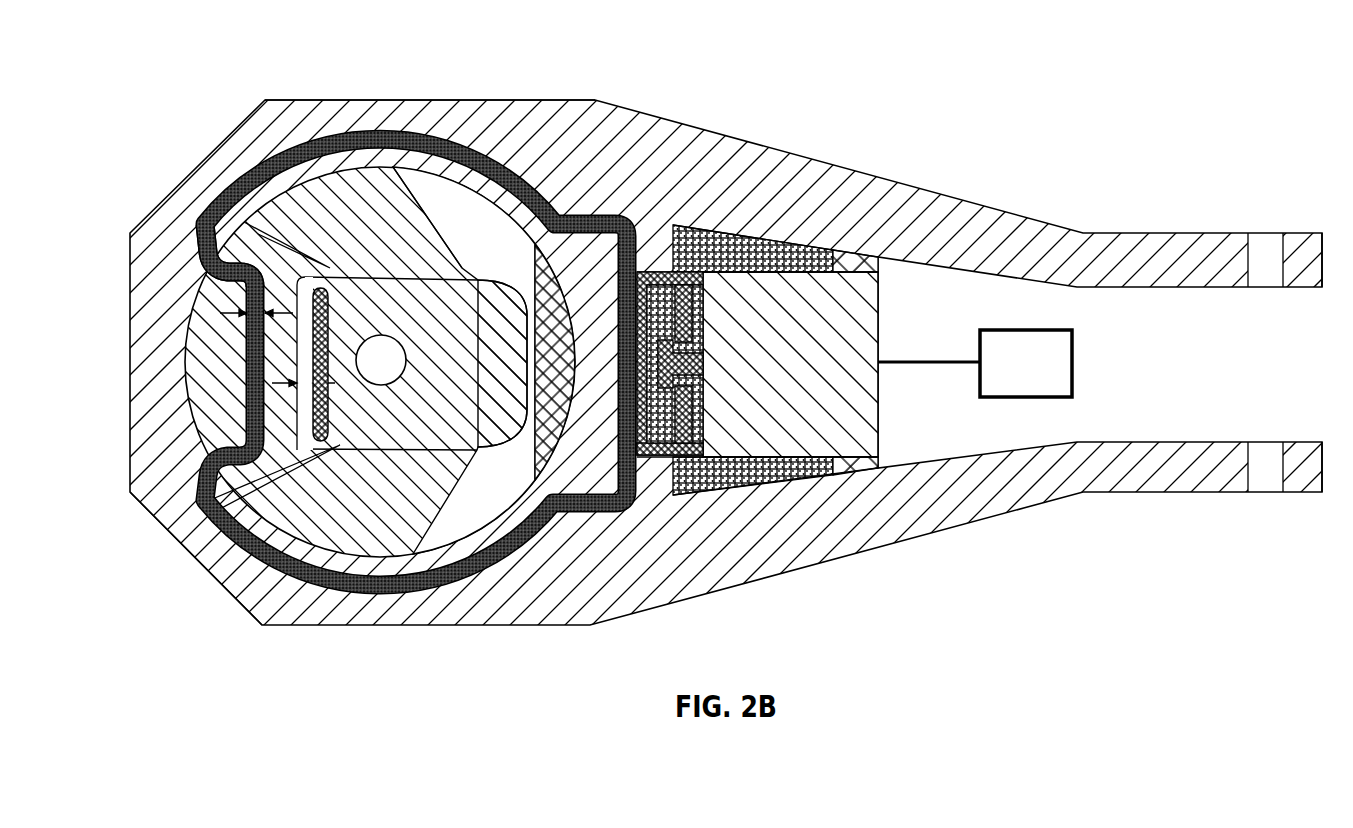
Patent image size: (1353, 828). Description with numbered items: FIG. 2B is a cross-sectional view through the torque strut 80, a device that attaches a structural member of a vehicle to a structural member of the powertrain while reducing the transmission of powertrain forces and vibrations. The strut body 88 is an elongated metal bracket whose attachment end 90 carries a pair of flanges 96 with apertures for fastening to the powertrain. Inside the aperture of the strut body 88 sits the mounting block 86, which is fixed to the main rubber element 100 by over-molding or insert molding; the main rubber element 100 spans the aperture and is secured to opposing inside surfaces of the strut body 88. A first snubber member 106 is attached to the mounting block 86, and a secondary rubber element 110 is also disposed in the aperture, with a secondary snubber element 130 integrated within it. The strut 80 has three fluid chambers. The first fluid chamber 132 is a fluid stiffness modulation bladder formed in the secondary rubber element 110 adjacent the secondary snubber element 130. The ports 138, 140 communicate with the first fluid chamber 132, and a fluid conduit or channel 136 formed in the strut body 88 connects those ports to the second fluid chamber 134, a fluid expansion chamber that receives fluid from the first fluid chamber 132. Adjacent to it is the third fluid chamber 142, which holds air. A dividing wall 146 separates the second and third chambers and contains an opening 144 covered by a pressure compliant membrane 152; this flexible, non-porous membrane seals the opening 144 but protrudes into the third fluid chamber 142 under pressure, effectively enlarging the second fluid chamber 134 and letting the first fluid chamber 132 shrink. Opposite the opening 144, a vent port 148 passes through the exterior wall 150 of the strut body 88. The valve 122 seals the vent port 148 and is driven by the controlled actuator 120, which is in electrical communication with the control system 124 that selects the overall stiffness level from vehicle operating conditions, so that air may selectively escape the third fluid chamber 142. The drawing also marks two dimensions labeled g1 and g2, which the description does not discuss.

The torque strut 80 is at (402, 94).
The fluid conduit or channel 136 is at (354, 133).
The dividing wall 146 is at (638, 268).
The strut body 88 is at (850, 192).
The flanges 96 is at (1178, 233).
The attachment end 90 is at (1268, 218).
The port 138 is at (197, 230).
The seal gap g2 is at (237, 292).
The secondary rubber element 110 is at (330, 268).
The mounting block 86 is at (463, 282).
The second fluid chamber 134 is at (537, 275).
The exterior wall 150 is at (680, 274).
The vent port 148 is at (692, 388).
The control system 124 is at (1073, 385).
The valve 122 is at (642, 349).
The pressure compliant membrane 152 is at (643, 392).
The third fluid chamber 142 is at (643, 430).
The main rubber element 100 is at (428, 473).
The first snubber member 106 is at (320, 432).
The electrode gap g1 is at (326, 386).
The first fluid chamber 132 is at (203, 400).
The secondary snubber element 130 is at (240, 343).
The port 140 is at (147, 506).
The opening or aperture 144 is at (640, 450).
The controlled actuator 120 is at (747, 460).